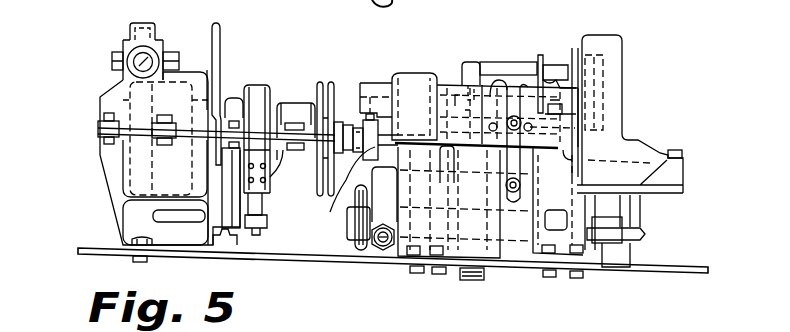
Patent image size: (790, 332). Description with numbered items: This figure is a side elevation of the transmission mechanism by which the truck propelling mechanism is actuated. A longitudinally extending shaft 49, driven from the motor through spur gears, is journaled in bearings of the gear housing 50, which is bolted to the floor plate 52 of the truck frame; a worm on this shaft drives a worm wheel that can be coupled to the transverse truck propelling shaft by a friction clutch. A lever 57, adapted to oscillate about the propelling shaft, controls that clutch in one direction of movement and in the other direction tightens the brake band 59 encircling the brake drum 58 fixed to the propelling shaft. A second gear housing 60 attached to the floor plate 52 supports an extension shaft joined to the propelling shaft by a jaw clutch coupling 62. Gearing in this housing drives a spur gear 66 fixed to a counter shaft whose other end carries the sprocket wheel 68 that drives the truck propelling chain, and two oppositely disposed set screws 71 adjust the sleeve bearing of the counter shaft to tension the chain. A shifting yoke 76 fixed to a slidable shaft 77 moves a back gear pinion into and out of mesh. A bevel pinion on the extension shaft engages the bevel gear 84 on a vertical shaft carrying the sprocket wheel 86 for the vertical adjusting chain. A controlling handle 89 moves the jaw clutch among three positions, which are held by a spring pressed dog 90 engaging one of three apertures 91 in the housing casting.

The longitudinally extending shaft 49 is at (160, 52).
The gear housing 50 is at (150, 30).
The floor plate 52 is at (210, 259).
The lever 57 is at (222, 37).
The brake drum 58 is at (282, 104).
The brake band 59 is at (255, 110).
The second gear housing 60 is at (415, 83).
The jaw clutch coupling 62 is at (328, 198).
The spur gear 66 is at (482, 268).
The sprocket wheel 68 is at (361, 184).
The set screws 71 is at (388, 250).
The shifting yoke 76 is at (476, 57).
The shaft 77 is at (605, 190).
The bevel gear 84 is at (656, 150).
The sprocket wheel 86 is at (646, 236).
The controlling handle 89 is at (545, 64).
The spring pressed dog 90 is at (562, 110).
The apertures 91 is at (510, 90).